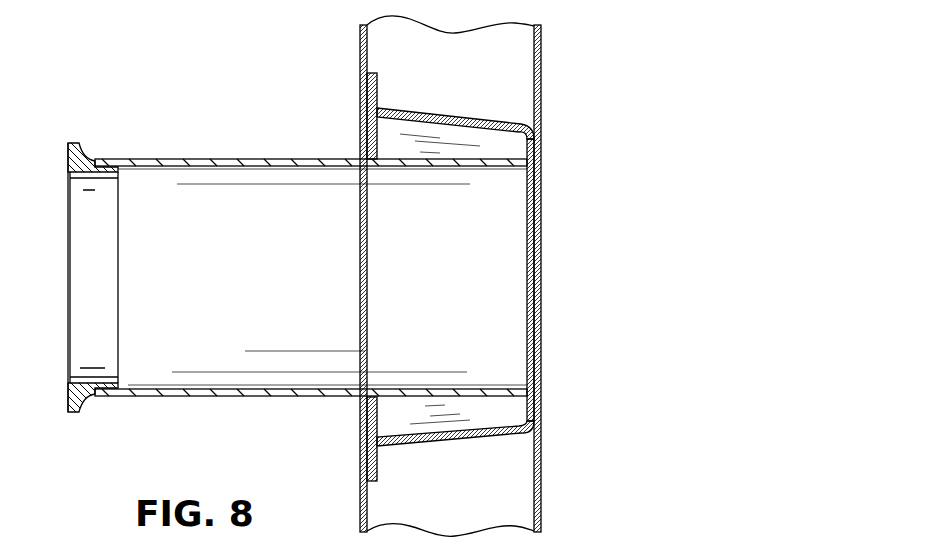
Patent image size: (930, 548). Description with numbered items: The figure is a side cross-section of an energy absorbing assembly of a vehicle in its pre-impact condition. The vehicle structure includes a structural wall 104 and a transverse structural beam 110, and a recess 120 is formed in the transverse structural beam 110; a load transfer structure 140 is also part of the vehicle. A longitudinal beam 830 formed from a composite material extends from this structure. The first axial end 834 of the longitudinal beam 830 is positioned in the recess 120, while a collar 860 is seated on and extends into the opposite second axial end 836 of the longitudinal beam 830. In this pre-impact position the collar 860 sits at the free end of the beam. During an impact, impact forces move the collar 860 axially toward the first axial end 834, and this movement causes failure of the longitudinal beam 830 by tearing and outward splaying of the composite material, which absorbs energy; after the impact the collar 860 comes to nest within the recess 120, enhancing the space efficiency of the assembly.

The structural wall 104 is at (541, 88).
The transverse structural beam 110 is at (360, 52).
The recess 120 is at (425, 143).
The load transfer structure 140 is at (361, 408).
The longitudinal beam 830 is at (187, 159).
The first axial end 834 is at (541, 260).
The second axial end 836 is at (90, 398).
The collar 860 is at (92, 160).